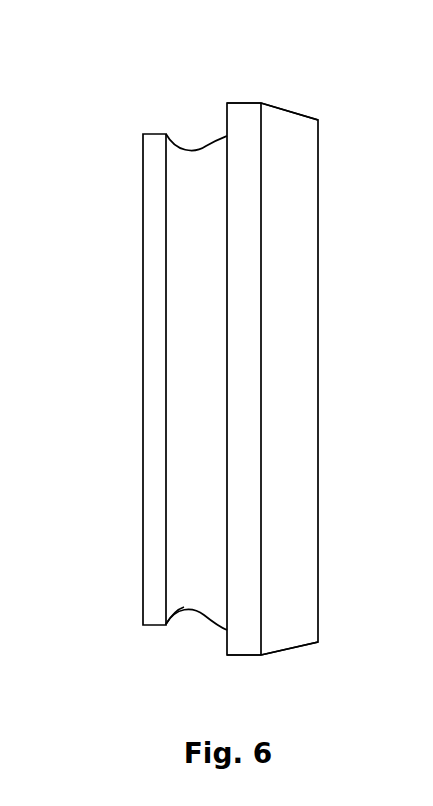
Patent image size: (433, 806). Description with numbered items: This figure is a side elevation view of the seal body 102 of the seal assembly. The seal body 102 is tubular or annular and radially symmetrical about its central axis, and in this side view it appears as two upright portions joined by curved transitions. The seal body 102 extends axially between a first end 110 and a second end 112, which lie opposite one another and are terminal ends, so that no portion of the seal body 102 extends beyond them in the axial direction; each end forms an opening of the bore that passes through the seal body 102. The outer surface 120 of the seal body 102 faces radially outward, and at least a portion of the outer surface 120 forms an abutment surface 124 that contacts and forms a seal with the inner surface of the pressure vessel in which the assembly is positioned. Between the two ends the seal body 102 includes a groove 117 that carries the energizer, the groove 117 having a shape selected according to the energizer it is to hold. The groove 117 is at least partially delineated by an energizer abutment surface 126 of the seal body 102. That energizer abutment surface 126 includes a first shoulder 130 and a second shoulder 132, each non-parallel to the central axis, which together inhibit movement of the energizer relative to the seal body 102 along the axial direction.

The seal body 102 is at (98, 95).
The first end 110 is at (319, 158).
The second end 112 is at (142, 210).
The groove 117 is at (201, 147).
The outer surface 120 is at (292, 648).
The abutment surface 124 is at (243, 103).
The energizer abutment surface 126 is at (194, 613).
The first shoulder 130 is at (226, 646).
The second shoulder 132 is at (178, 616).